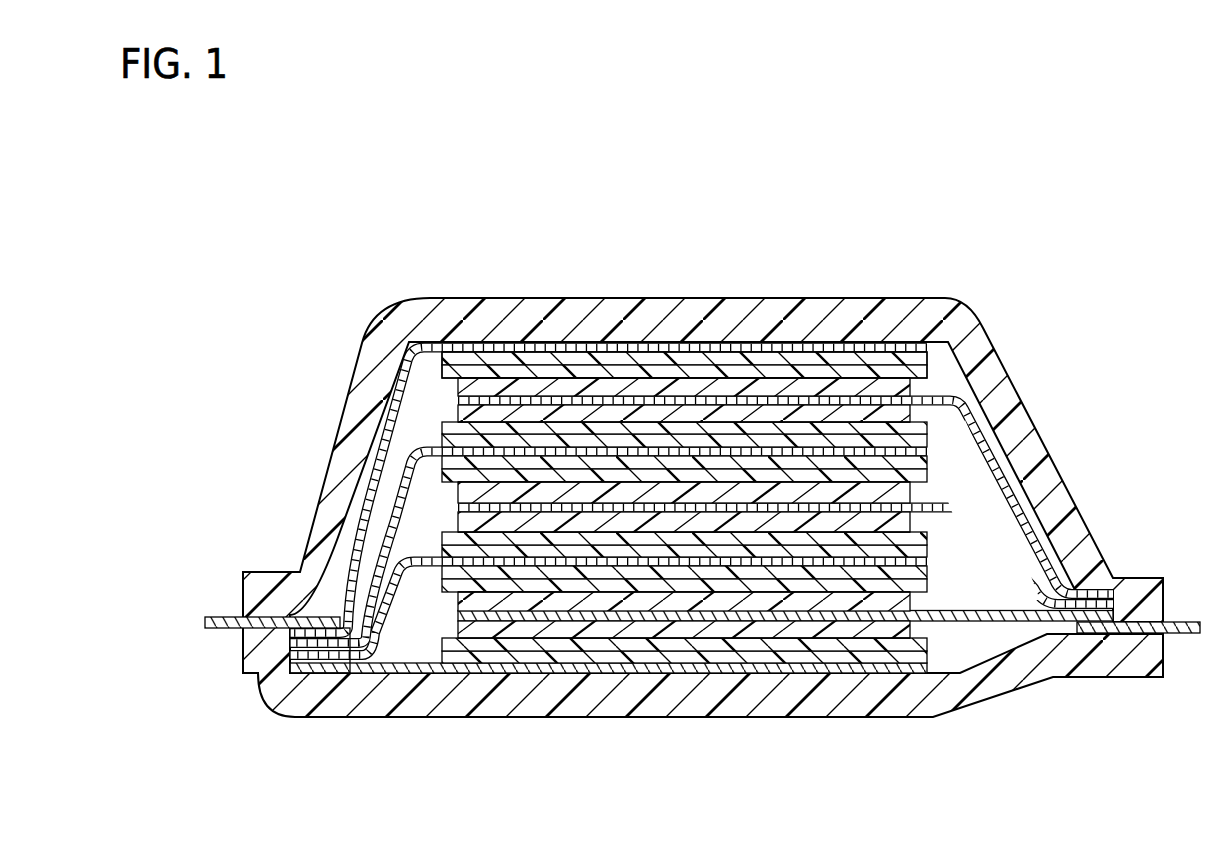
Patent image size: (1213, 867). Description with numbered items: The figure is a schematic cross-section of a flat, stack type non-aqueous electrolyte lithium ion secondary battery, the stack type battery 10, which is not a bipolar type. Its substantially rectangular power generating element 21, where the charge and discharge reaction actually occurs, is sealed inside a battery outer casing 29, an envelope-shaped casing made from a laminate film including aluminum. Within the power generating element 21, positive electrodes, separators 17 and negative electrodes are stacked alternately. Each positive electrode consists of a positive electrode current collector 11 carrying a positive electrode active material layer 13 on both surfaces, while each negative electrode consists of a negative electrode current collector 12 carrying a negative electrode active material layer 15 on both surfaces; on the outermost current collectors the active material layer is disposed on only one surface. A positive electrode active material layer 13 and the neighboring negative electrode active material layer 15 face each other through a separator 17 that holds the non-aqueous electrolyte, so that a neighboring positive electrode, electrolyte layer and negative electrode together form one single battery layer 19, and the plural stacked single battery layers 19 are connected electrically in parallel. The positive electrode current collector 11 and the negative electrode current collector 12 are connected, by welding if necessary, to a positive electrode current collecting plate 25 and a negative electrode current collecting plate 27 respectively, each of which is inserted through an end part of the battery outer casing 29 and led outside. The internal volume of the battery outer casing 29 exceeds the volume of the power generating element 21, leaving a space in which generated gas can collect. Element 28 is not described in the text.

The stack type battery 10 is at (258, 171).
The positive electrode current collector 11 is at (780, 347).
The negative electrode current collector 12 is at (598, 395).
The positive electrode active material layer 13 is at (733, 356).
The negative electrode active material layer 15 is at (641, 380).
The separator 17 is at (688, 372).
The single battery layer 19 is at (577, 222).
The power generating element 21 is at (699, 472).
The positive electrode current collecting plate (tab) 25 is at (205, 617).
The negative electrode current collecting plate (tab) 27 is at (1188, 622).
The outer casing 28 is at (1143, 578).
The battery outer casing 29 is at (963, 483).